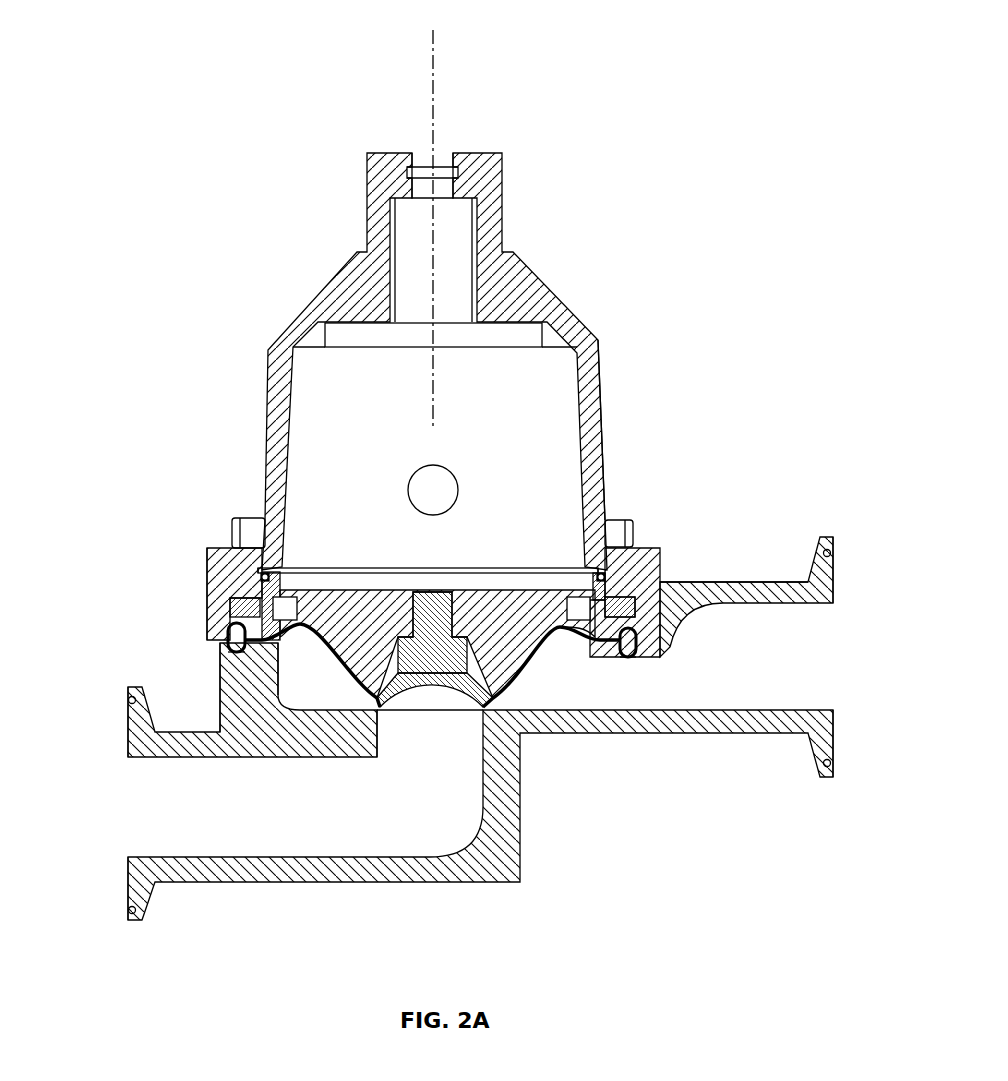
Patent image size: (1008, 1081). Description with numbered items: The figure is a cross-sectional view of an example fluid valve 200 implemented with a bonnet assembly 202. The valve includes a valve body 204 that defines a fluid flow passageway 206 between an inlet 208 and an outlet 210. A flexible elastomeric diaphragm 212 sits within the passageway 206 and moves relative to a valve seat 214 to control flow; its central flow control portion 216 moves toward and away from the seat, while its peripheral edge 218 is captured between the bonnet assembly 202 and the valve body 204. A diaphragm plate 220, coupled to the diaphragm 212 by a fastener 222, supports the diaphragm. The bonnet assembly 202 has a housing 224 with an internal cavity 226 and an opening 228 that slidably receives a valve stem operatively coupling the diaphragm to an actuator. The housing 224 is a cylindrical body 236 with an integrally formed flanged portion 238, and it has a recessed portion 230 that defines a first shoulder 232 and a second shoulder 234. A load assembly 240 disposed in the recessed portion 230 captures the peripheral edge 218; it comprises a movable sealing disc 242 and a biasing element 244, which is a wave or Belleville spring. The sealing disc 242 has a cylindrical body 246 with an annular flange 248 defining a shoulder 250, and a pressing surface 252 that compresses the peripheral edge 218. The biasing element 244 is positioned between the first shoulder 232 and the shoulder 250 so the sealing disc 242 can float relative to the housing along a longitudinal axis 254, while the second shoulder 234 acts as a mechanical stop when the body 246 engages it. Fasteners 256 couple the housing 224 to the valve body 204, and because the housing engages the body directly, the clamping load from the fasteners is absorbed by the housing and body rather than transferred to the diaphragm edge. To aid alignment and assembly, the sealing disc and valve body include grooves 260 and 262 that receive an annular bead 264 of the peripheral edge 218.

The fluid valve 200 is at (290, 170).
The bonnet assembly 202 is at (172, 416).
The valve body 204 is at (521, 805).
The fluid flow passageway 206 is at (317, 814).
The inlet 208 is at (128, 780).
The outlet 210 is at (833, 653).
The diaphragm 212 is at (513, 672).
The valve seat 214 is at (375, 760).
The flow control portion 216 is at (380, 712).
The peripheral edge 218 is at (243, 657).
The diaphragm plate 220 is at (383, 592).
The fastener 222 is at (433, 605).
The housing 224 is at (268, 362).
The internal cavity 226 is at (364, 404).
The opening 228 is at (462, 230).
The recessed portion 230 is at (228, 578).
The first shoulder 232 is at (633, 560).
The second shoulder 234 is at (601, 572).
The cylindrical body 236 is at (599, 352).
The flanged portion 238 is at (610, 587).
The load assembly 240 is at (230, 608).
The sealing disc 242 is at (228, 640).
The biasing element 244 is at (660, 582).
The cylindrical body 246 is at (207, 552).
The annular flange 248 is at (628, 621).
The shoulder 250 is at (262, 648).
The pressing surface 252 is at (603, 635).
The longitudinal axis 254 is at (437, 50).
The fasteners 256 is at (243, 521).
The groove 260 is at (592, 575).
The groove 262 is at (240, 655).
The bead 264 is at (636, 645).